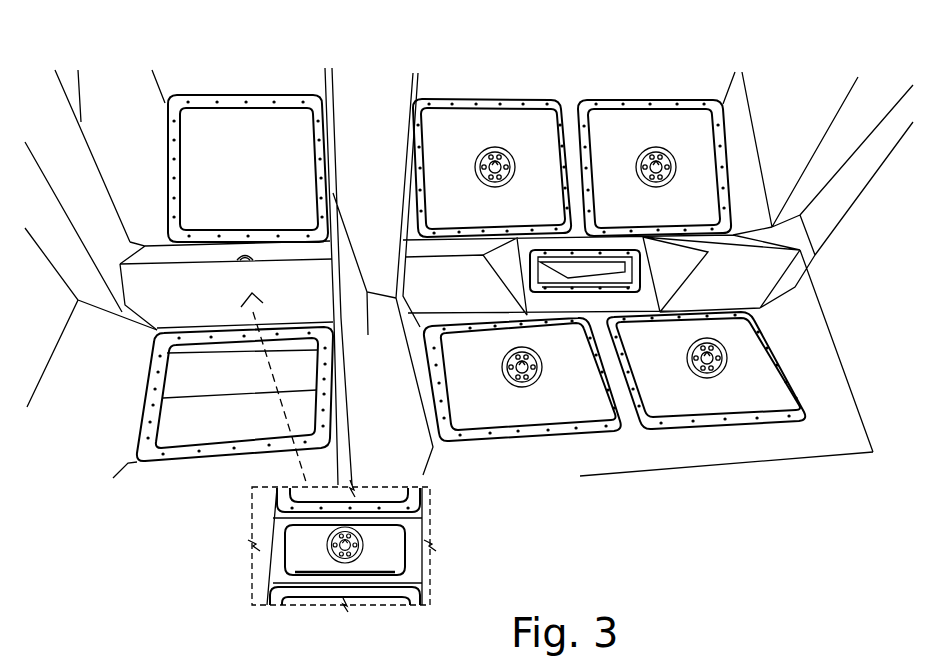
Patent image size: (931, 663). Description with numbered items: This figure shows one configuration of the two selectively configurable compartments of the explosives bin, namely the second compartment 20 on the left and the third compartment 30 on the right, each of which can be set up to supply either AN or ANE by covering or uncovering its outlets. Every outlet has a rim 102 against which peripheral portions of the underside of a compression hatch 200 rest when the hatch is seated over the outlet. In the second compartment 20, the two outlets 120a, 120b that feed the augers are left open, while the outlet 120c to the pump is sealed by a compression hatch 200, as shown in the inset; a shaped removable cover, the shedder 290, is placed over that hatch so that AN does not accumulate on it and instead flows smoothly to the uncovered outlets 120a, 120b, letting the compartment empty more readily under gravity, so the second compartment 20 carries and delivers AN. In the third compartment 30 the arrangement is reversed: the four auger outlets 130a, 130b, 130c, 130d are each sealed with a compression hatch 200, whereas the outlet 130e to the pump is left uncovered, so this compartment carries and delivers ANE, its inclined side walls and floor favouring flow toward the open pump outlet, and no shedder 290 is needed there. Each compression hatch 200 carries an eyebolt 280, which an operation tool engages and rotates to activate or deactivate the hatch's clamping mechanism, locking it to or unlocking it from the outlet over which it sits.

The second compartment 20 is at (290, 70).
The third compartment 30 is at (718, 82).
The rim 102 is at (198, 98).
The outlet 120a is at (228, 80).
The outlet 120b is at (232, 470).
The outlet 120c is at (412, 538).
The outlet 130a is at (495, 92).
The outlet 130b is at (660, 92).
The outlet 130c is at (540, 455).
The outlet 130d is at (765, 432).
The outlet 130e is at (612, 298).
The compression hatch 200 is at (440, 100).
The eyebolt 280 is at (582, 432).
The shedder 290 is at (223, 310).